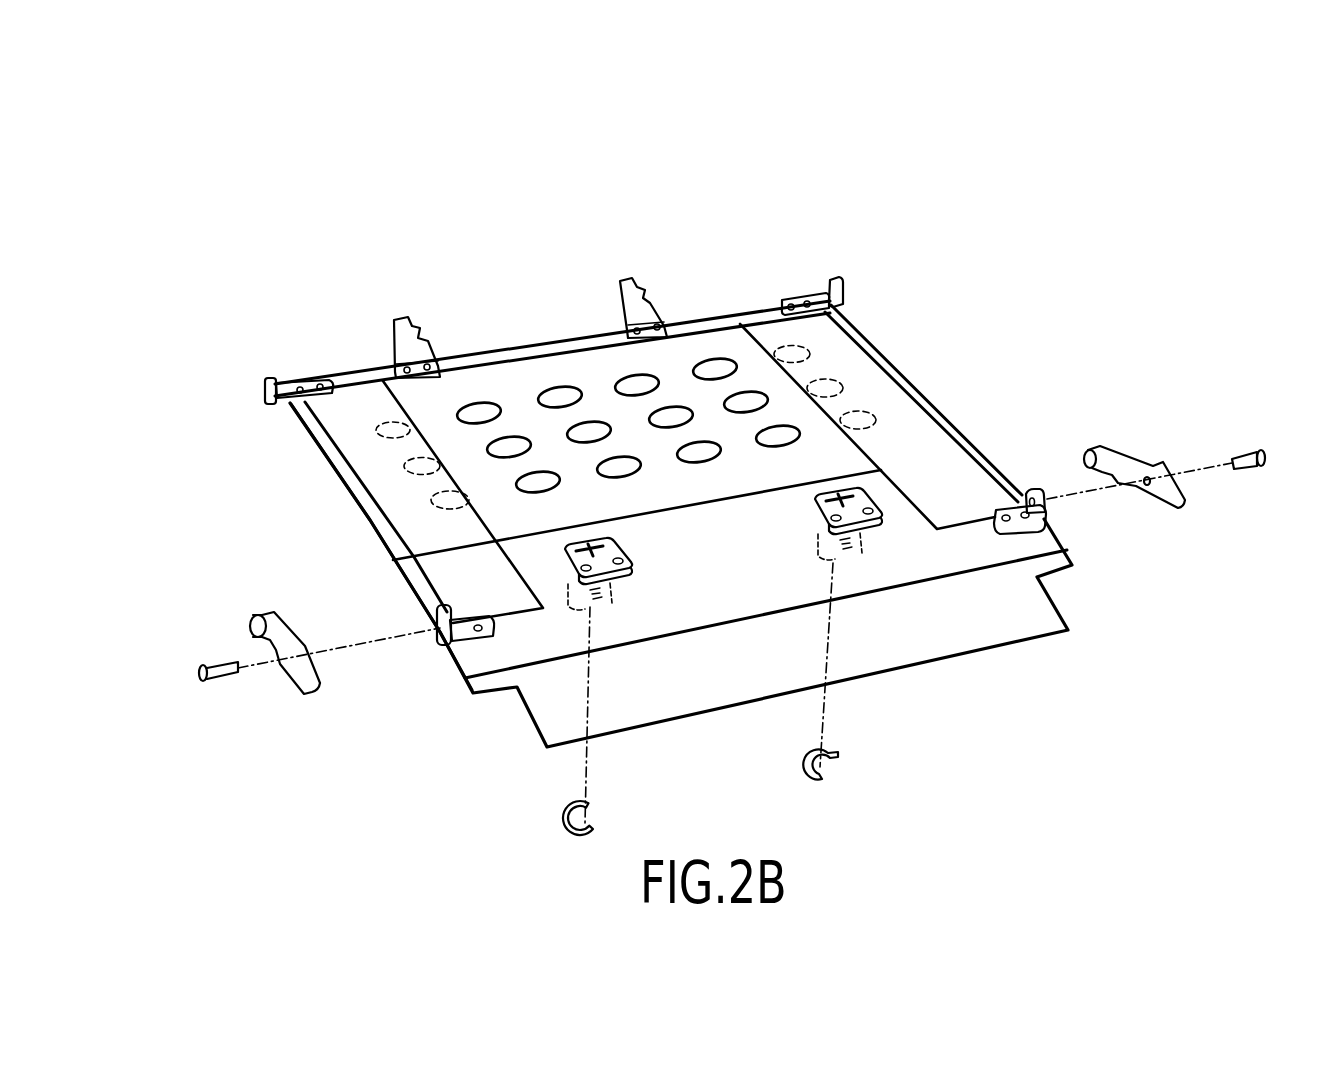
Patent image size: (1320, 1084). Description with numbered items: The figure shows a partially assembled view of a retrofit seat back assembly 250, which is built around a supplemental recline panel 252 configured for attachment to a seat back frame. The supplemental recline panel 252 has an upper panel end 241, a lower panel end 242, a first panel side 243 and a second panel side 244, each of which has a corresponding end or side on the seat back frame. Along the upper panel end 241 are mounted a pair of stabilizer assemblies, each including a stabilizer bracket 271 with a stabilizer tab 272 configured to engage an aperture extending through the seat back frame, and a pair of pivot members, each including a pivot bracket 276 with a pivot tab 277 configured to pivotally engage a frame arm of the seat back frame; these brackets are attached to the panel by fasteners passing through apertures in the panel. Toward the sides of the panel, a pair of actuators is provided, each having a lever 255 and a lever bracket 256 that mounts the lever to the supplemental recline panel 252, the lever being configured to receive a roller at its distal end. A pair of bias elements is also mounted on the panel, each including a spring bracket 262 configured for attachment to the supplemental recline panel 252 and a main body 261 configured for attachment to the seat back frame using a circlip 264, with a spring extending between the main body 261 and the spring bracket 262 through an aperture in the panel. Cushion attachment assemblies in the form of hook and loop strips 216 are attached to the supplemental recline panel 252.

The retrofit seat back assembly 250 is at (281, 181).
The lower panel end 242 is at (652, 705).
The upper panel end 241 is at (593, 337).
The first panel side 243 is at (360, 508).
The second panel side 244 is at (957, 430).
The hook and loop strips 216 is at (917, 417).
The stabilizer bracket 271 is at (403, 337).
The stabilizer tab 272 is at (427, 322).
The pivot bracket 276 is at (798, 295).
The pivot tab 277 is at (840, 282).
The supplemental recline panel 252 is at (547, 697).
The lever bracket 256 is at (1046, 504).
The lever 255 is at (1177, 493).
The main body 261 is at (860, 547).
The spring bracket 262 is at (877, 520).
The circlip 264 is at (800, 767).